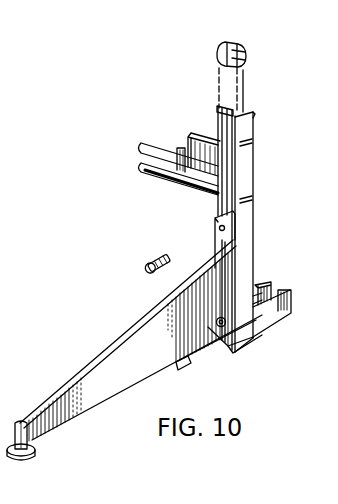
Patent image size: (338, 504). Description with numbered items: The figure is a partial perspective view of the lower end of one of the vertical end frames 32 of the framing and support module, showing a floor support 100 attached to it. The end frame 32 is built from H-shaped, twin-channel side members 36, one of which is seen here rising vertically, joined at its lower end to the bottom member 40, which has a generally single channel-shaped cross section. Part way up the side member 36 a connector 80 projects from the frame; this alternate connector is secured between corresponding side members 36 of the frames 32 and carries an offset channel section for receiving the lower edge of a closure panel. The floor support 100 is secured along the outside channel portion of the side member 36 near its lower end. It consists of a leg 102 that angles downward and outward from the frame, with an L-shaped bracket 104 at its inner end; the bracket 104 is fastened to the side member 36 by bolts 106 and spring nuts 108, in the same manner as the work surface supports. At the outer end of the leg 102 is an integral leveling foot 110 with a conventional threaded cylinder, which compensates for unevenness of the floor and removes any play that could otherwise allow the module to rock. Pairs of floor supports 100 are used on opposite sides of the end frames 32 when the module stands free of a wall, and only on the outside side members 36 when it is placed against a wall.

The floor support 100 is at (113, 330).
The vertical end frame 32 is at (247, 167).
The side member 36 is at (254, 241).
The connector 80 is at (162, 142).
The spring nut 108 is at (236, 42).
The leg 102 is at (77, 374).
The L-shaped bracket 104 is at (228, 345).
The bolt 106 is at (213, 233).
The leveling foot 110 is at (25, 461).
The bottom member 40 is at (268, 320).